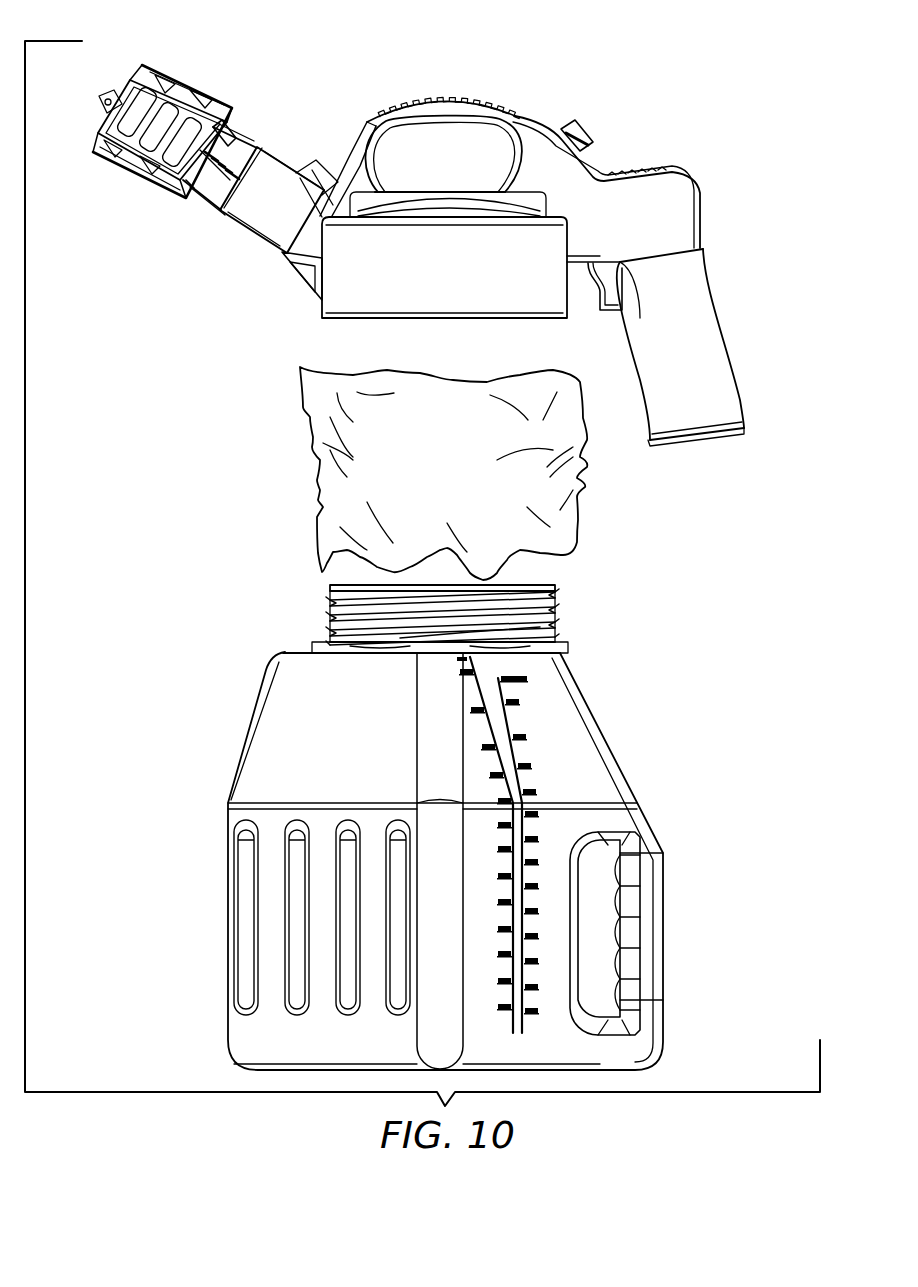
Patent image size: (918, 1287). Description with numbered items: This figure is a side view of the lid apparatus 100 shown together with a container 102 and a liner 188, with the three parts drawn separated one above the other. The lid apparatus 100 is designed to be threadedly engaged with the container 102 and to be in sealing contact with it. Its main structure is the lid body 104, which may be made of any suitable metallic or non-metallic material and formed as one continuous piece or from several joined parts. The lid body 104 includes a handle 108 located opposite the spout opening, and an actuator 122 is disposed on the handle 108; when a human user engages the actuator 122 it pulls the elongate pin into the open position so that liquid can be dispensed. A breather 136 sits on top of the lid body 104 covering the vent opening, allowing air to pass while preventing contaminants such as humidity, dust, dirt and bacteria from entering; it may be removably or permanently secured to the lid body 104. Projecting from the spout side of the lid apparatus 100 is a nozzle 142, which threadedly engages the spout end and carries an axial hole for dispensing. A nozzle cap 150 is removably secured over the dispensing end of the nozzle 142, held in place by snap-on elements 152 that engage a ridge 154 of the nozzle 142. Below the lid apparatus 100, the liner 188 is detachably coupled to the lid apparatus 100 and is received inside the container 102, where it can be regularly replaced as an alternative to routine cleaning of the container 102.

The lid apparatus 100 is at (722, 128).
The container 102 is at (598, 762).
The lid body 104 is at (358, 166).
The handle 108 is at (706, 338).
The actuator 122 is at (612, 318).
The breather 136 is at (572, 136).
The nozzle 142 is at (207, 192).
The nozzle cap 150 is at (125, 88).
The snap-on elements 152 is at (190, 96).
The ridge 154 is at (216, 134).
The liner 188 is at (338, 507).